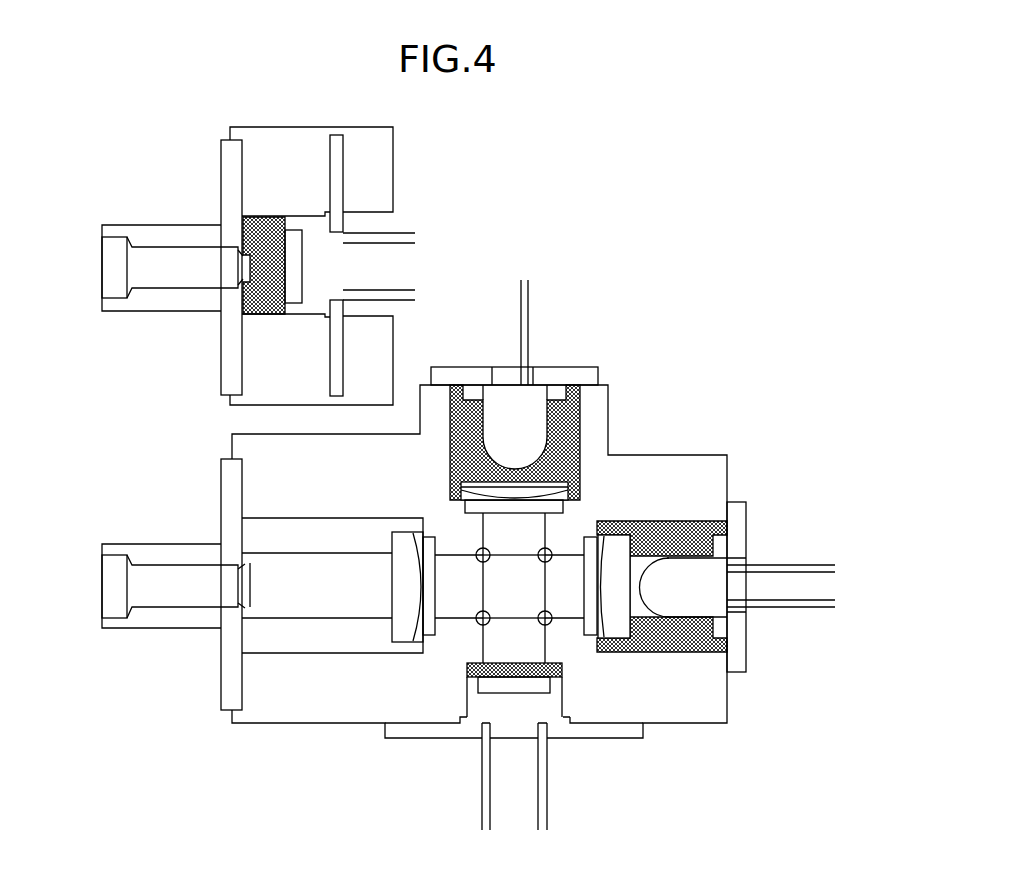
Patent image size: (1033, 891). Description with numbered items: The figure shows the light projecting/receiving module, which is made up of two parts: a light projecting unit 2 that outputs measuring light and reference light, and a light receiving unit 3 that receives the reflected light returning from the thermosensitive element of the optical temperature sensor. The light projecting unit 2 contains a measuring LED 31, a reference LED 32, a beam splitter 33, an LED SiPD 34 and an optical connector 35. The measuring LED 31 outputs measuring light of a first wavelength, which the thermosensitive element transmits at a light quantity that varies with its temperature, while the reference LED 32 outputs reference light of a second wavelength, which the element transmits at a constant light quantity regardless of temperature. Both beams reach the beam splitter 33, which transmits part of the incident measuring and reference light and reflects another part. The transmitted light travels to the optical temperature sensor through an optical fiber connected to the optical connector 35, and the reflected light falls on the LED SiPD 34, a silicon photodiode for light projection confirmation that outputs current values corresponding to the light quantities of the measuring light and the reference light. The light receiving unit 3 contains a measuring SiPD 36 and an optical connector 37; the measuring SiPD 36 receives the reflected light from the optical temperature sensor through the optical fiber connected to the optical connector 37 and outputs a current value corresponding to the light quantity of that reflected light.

The light projecting unit 2 is at (214, 424).
The light receiving unit 3 is at (198, 143).
The measuring LED 31 is at (711, 564).
The reference LED 32 is at (500, 403).
The beam splitter 33 is at (527, 588).
The LED SiPD 34 is at (512, 710).
The optical connector 35 is at (102, 584).
The measuring SiPD 36 is at (318, 266).
The optical connector 37 is at (102, 266).